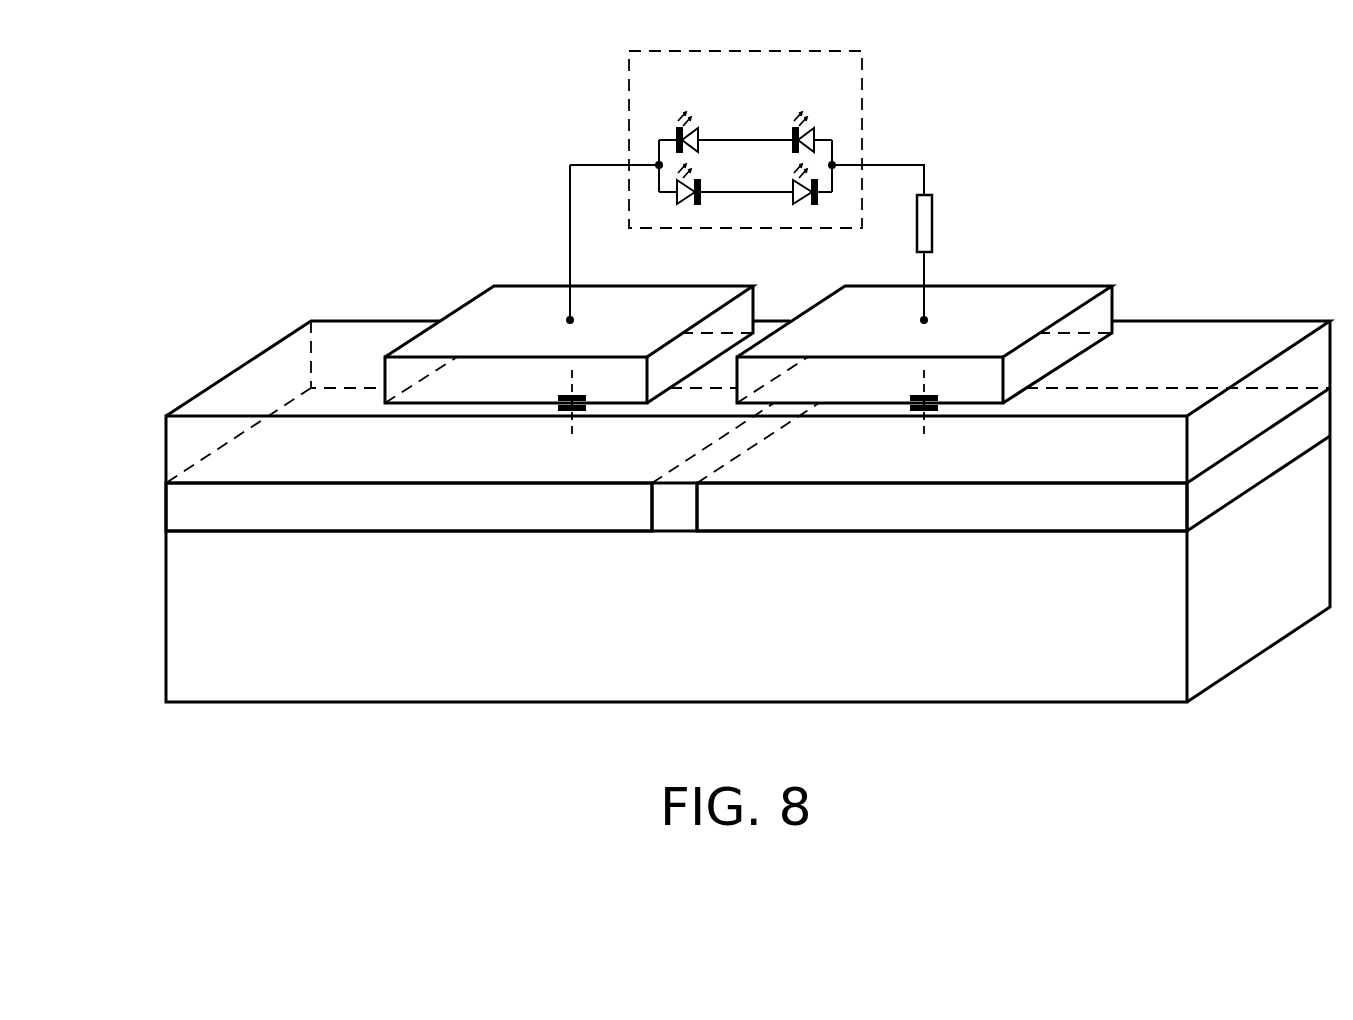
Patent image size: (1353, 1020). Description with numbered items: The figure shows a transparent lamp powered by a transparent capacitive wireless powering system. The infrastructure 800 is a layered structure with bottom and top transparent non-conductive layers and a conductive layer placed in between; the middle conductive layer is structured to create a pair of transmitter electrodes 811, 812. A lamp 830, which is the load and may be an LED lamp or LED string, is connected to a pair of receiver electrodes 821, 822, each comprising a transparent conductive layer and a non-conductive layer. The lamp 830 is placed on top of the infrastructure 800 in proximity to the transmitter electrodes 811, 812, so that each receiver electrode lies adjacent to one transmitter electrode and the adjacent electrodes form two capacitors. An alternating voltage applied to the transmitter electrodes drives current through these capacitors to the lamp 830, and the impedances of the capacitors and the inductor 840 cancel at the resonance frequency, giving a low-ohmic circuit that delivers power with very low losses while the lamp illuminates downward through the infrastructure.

The infrastructure 800 is at (166, 617).
The transmitter electrode 811 is at (1153, 517).
The transmitter electrode 812 is at (626, 518).
The receiver electrode 821 is at (1073, 297).
The receiver electrode 822 is at (508, 297).
The lamp 830 is at (862, 78).
The inductor 840 is at (932, 222).